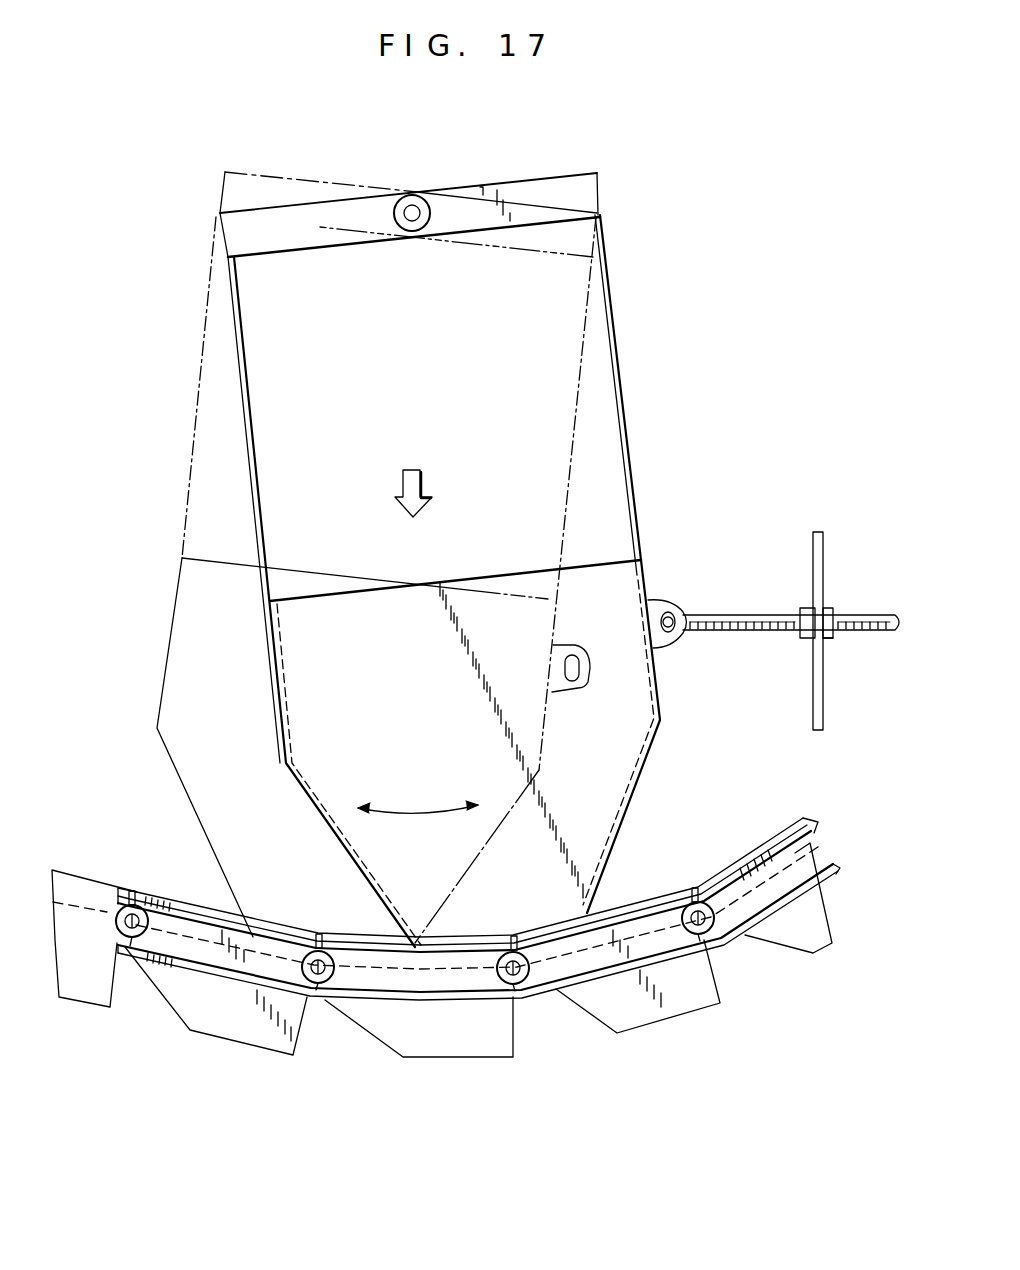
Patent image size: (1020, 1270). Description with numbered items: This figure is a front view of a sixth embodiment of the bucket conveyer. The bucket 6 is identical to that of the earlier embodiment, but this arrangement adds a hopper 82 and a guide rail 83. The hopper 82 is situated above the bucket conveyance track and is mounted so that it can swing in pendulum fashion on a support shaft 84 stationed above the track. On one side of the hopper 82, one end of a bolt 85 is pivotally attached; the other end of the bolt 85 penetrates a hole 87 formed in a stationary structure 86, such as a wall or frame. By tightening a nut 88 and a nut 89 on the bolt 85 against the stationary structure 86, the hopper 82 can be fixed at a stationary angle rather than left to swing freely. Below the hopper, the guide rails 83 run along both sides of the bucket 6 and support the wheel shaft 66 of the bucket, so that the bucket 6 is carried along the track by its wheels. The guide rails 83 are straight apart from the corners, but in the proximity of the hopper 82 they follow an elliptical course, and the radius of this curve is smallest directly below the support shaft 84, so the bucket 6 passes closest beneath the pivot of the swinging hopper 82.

The bucket 6 is at (460, 1038).
The wheel shaft 66 is at (117, 904).
The hopper 82 is at (601, 435).
The guide rail 83 is at (402, 997).
The support shaft 84 is at (413, 207).
The bolt 85 is at (718, 615).
The stationary structure 86 is at (813, 693).
The hole 87 is at (840, 620).
The nut 88 is at (808, 608).
The nut 89 is at (832, 638).